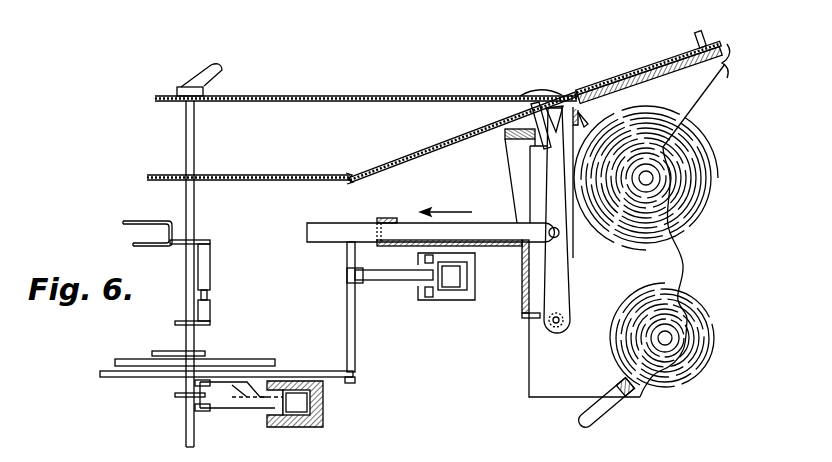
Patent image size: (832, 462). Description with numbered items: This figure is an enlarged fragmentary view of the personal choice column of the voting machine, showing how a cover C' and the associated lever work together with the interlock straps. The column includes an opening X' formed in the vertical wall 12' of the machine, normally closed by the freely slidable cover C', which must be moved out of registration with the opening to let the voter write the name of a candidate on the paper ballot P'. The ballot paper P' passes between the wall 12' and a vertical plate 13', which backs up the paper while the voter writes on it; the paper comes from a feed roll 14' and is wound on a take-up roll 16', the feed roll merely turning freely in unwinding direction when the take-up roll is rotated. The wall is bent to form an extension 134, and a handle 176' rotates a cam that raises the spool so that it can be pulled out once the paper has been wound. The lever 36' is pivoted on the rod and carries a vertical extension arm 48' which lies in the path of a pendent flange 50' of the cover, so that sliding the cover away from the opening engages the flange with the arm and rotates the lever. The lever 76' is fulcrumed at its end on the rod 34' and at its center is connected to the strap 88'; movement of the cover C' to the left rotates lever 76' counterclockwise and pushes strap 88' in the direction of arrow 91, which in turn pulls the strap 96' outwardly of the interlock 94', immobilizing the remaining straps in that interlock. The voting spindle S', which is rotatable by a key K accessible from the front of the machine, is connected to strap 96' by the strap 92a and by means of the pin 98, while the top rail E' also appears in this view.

The key K is at (222, 70).
The voting spindle S' is at (206, 274).
The top guide rail E' is at (366, 81).
The strap 88' is at (433, 217).
The arrow 91 is at (442, 210).
The vertical extension arm 48' is at (463, 137).
The pendent flange 50' is at (553, 107).
The cover C' is at (647, 87).
The opening X' is at (649, 67).
The vertical wall 12' is at (715, 30).
The extension 134 is at (730, 78).
The vertical plate 13' is at (717, 114).
The feed roll 14' is at (646, 178).
The paper ballot P' is at (649, 230).
The lever 36' is at (462, 223).
The lever 76' is at (575, 220).
The rod 34' is at (556, 337).
The take-up roll 16' is at (668, 335).
The handle 176' is at (614, 407).
The strap 96' is at (394, 295).
The interlock 94' is at (446, 298).
The pin 98 is at (347, 330).
The strap 92a is at (255, 410).